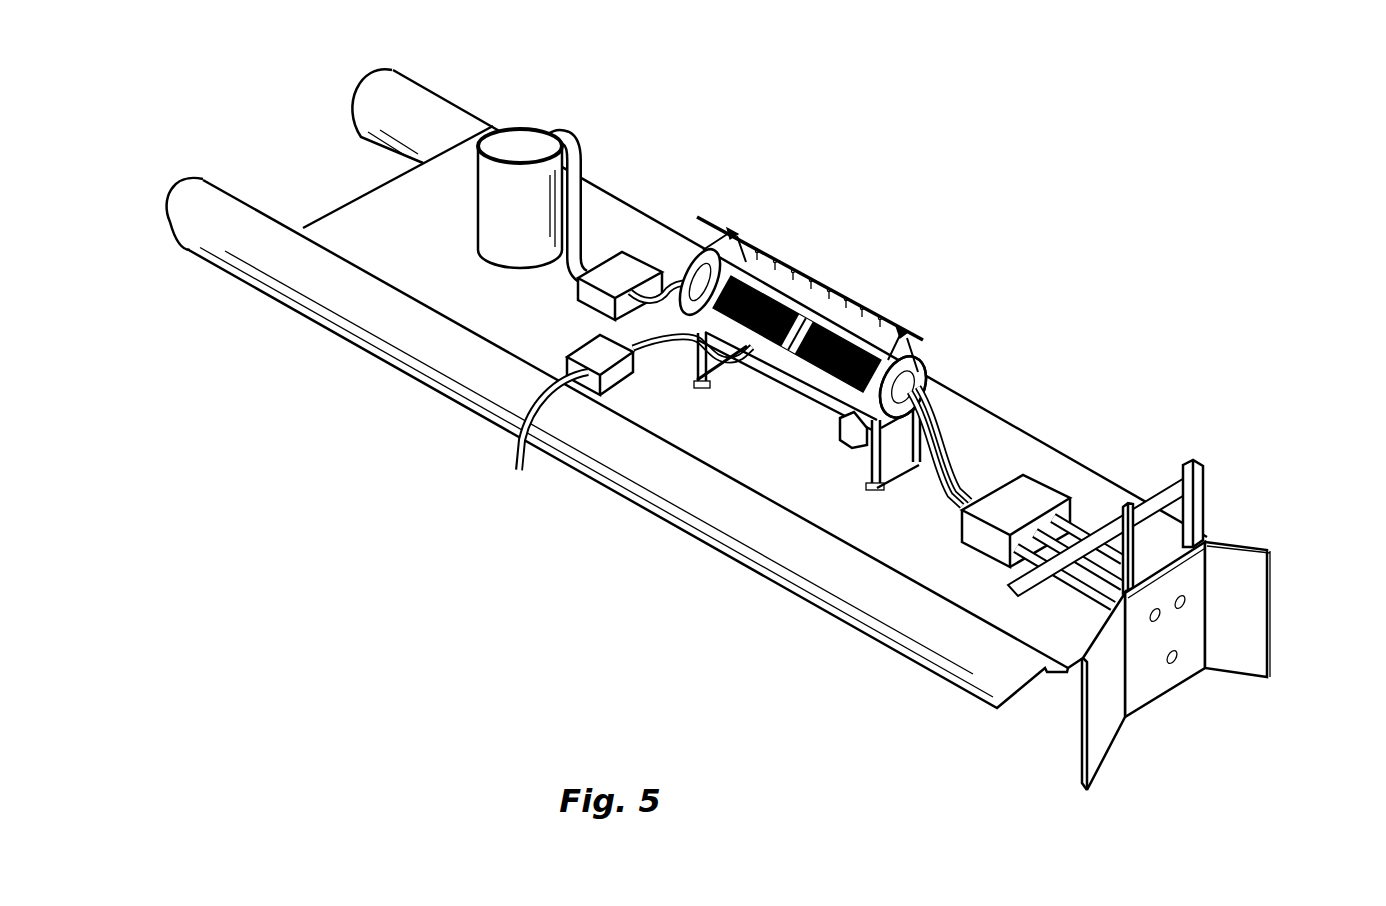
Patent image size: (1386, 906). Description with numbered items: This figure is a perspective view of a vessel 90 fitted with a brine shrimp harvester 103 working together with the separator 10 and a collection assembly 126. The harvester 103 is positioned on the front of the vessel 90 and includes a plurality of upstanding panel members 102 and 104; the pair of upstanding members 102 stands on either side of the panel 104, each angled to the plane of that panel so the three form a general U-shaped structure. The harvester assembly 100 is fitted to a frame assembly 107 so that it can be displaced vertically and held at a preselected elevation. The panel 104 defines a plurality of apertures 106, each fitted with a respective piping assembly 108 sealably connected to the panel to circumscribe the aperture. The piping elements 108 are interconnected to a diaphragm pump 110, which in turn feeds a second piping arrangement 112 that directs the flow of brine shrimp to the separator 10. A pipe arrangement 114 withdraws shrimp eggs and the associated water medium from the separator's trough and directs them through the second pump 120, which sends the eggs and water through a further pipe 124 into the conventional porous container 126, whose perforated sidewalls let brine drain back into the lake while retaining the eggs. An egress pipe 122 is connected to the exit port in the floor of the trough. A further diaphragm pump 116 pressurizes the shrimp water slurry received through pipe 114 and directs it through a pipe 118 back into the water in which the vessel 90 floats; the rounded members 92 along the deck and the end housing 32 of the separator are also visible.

The separator 10 is at (828, 317).
The drum end housing 32 is at (920, 363).
The vessel 90 is at (870, 603).
The conveyor rollers 92 is at (430, 100).
The harvester assembly 100 is at (1220, 631).
The upstanding panel members 102 is at (1258, 644).
The brine shrimp harvester 103 is at (712, 512).
The panel 104 is at (1155, 687).
The apertures 106 is at (1156, 610).
The frame assembly 107 is at (1212, 475).
The piping assembly 108 is at (1048, 537).
The diaphragm pump 110 is at (1030, 490).
The second piping arrangement 112 is at (963, 470).
The pipe arrangement 114 is at (674, 355).
The diaphragm pump 116 is at (592, 352).
The pipe 118 is at (548, 418).
The second pump 120 is at (630, 255).
The egress pipe 122 is at (683, 287).
The pipe 124 is at (580, 150).
The porous container 126 is at (521, 130).